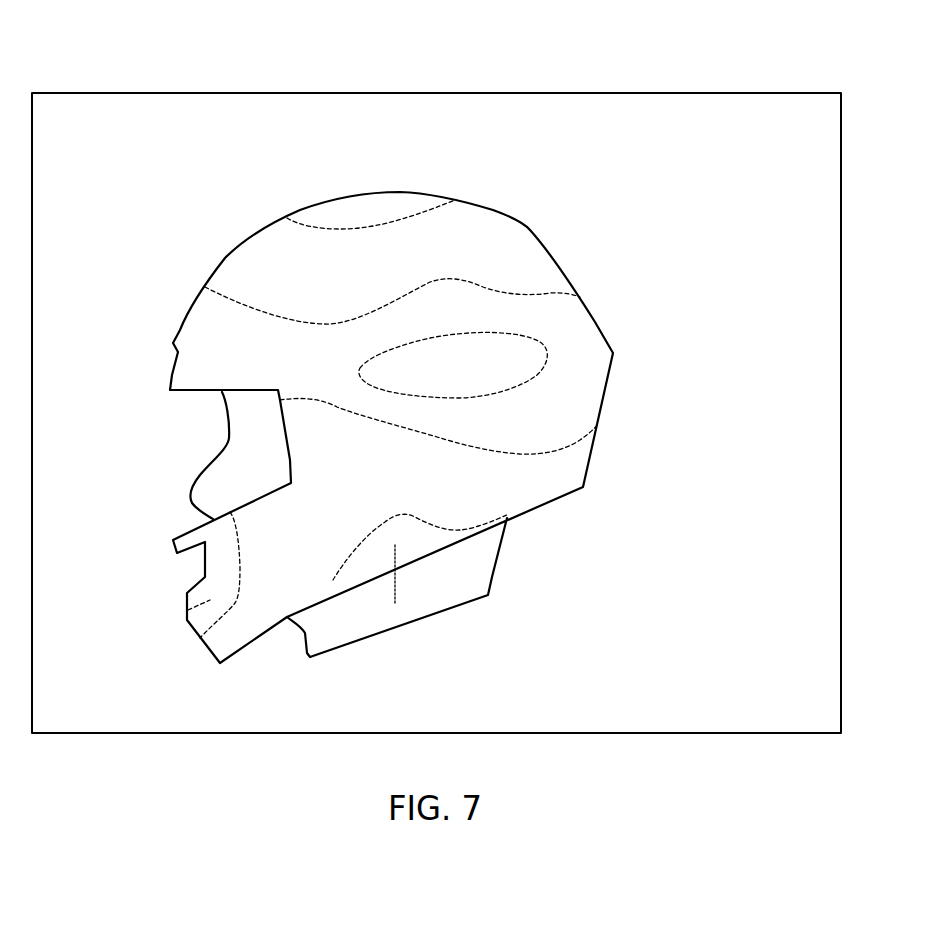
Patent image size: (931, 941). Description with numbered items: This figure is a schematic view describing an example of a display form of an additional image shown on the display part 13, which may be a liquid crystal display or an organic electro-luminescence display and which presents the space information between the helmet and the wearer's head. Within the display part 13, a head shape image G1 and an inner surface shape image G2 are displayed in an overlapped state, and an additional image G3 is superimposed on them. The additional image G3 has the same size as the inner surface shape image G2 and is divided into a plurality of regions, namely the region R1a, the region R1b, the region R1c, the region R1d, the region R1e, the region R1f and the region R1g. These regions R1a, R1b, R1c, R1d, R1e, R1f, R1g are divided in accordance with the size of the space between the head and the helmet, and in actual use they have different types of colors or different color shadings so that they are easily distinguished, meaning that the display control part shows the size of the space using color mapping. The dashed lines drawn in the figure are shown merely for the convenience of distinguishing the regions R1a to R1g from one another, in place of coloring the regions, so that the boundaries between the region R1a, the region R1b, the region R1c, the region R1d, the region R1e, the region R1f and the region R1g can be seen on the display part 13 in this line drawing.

The display part 13 is at (436, 370).
The region R1a is at (377, 173).
The inner surface shape image G2 is at (418, 182).
The region R1b is at (568, 240).
The additional image G3 is at (442, 301).
The region R1c is at (655, 356).
The region R1d is at (475, 393).
The region R1e is at (487, 536).
The region R1f is at (399, 611).
The head shape image G1 is at (185, 515).
The region R1g is at (155, 601).